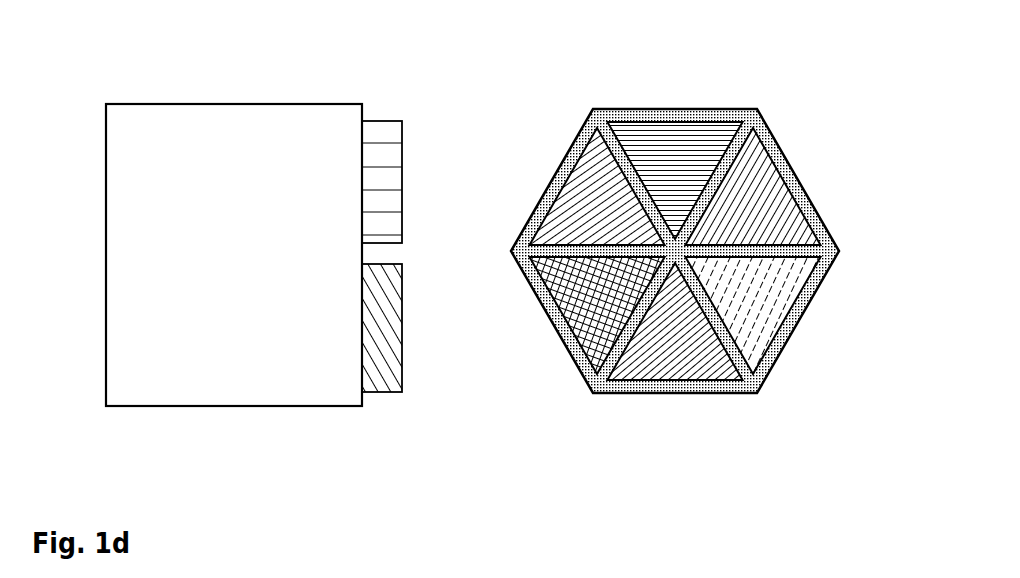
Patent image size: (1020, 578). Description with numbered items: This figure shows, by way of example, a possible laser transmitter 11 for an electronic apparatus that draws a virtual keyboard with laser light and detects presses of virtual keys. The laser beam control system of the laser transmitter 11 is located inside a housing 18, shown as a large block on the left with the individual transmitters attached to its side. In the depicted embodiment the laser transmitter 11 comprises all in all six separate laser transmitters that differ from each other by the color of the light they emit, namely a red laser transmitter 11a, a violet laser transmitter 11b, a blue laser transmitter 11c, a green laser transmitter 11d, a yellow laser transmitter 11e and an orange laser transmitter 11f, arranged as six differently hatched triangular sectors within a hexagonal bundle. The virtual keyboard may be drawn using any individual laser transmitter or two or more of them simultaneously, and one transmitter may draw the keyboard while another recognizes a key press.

The laser transmitter 11 is at (588, 89).
The red laser transmitter 11a is at (383, 198).
The violet laser transmitter 11b is at (572, 212).
The blue laser transmitter 11c is at (572, 323).
The green laser transmitter 11d is at (377, 352).
The yellow laser transmitter 11e is at (773, 317).
The orange laser transmitter 11f is at (782, 203).
The housing 18 is at (277, 392).